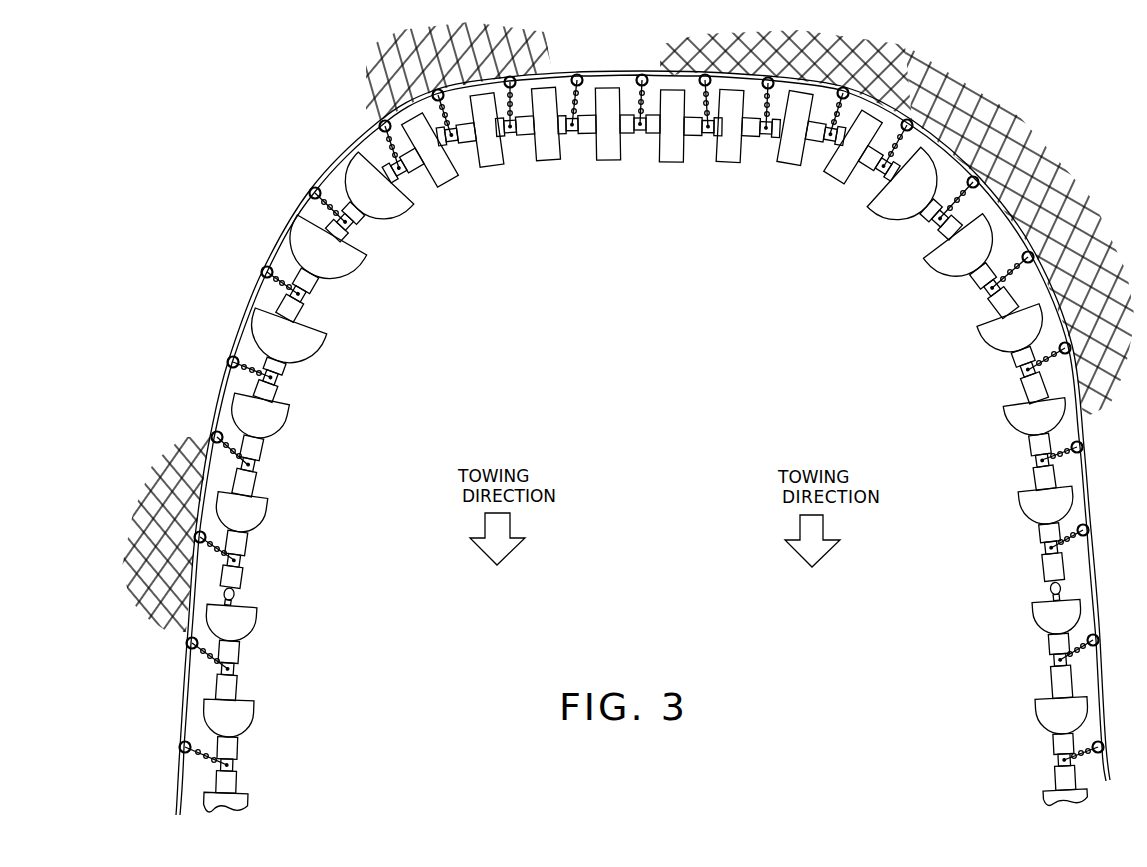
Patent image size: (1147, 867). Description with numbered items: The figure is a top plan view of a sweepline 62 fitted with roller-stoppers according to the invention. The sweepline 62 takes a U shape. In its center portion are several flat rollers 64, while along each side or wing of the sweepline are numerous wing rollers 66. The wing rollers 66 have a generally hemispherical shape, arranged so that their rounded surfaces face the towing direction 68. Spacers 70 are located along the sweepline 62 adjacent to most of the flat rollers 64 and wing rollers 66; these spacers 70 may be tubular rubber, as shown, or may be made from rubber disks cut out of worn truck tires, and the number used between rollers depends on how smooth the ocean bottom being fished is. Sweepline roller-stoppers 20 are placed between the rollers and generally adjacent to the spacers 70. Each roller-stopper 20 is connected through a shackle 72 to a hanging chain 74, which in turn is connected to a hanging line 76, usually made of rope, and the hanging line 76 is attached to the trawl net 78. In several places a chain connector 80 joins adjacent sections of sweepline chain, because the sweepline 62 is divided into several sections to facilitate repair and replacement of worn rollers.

The sweepline roller-stopper 20 is at (420, 167).
The sweepline 62 is at (646, 450).
The flat rollers 64 is at (727, 155).
The wing rollers 66 is at (326, 482).
The towing direction 68 is at (512, 521).
The spacers 70 is at (1023, 373).
The shackle 72 is at (342, 167).
The hanging chain 74 is at (310, 195).
The hanging line 76 is at (270, 238).
The trawl net 78 is at (1024, 115).
The chain connector 80 is at (1050, 590).